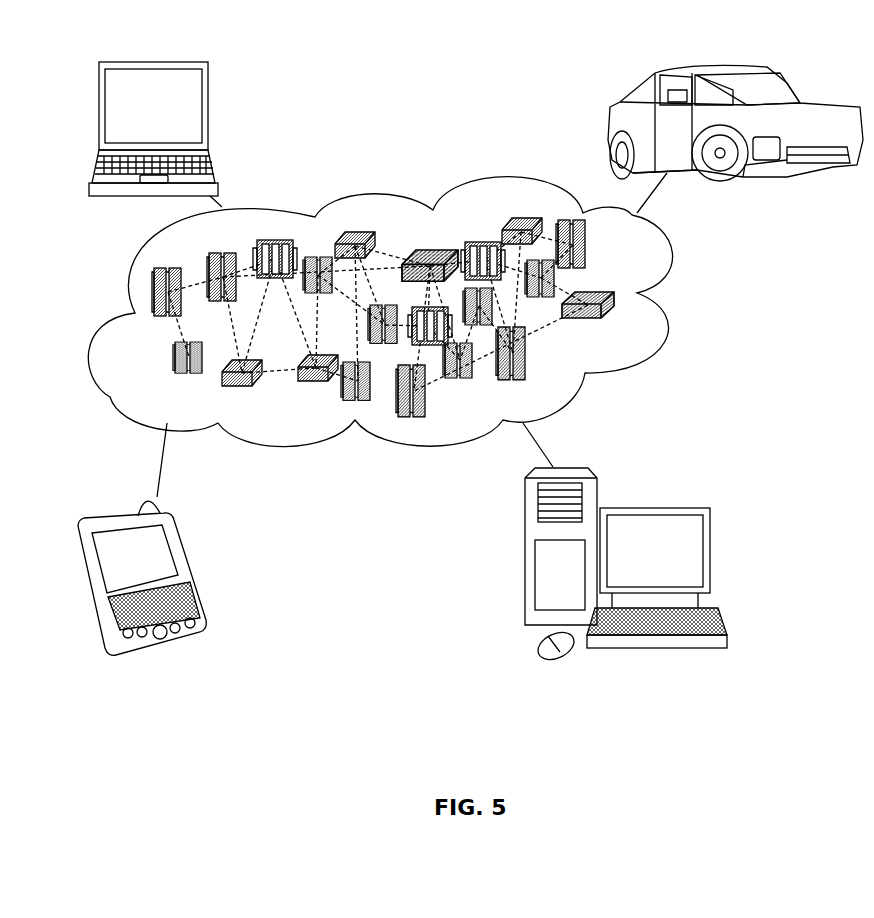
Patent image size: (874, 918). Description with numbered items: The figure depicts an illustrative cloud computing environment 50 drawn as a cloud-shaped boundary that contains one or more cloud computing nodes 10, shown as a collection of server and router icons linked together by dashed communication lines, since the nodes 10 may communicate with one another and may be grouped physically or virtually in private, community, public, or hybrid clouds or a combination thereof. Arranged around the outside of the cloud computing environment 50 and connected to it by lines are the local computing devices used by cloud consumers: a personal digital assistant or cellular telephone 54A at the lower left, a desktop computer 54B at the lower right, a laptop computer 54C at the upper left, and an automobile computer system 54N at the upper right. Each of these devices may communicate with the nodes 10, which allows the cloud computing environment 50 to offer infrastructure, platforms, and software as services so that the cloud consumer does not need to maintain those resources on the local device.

The cloud computing nodes 10 is at (640, 350).
The cloud computing environment 50 is at (673, 250).
The personal digital assistant (PDA) or cellular telephone 54A is at (180, 550).
The desktop computer 54B is at (710, 548).
The laptop computer 54C is at (208, 110).
The automobile computer system 54N is at (767, 80).